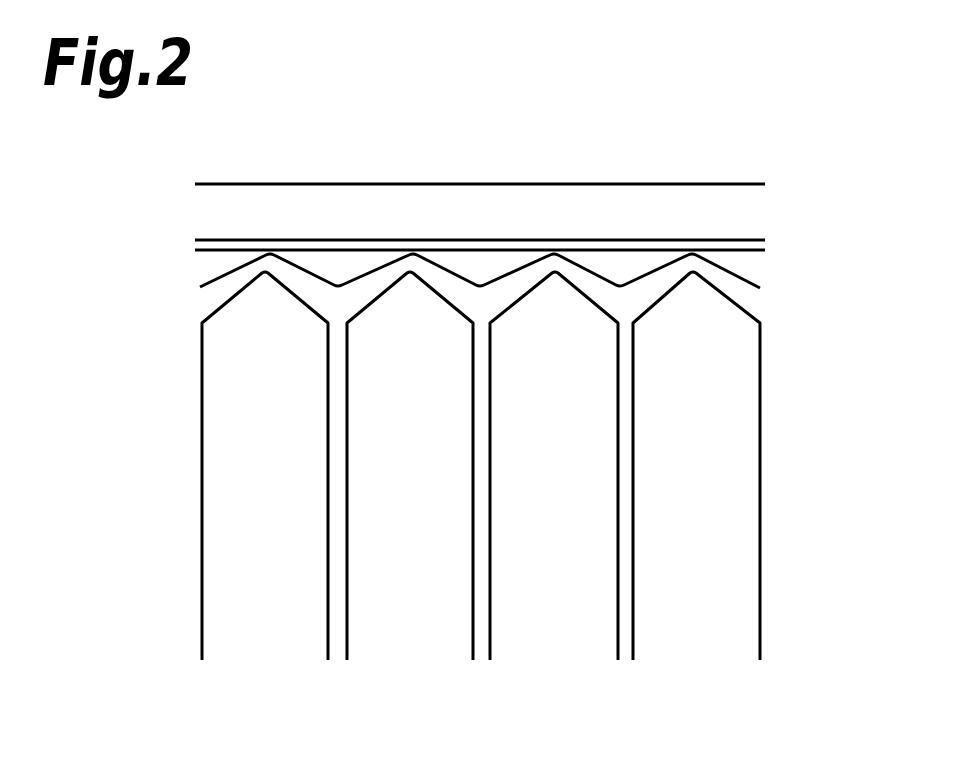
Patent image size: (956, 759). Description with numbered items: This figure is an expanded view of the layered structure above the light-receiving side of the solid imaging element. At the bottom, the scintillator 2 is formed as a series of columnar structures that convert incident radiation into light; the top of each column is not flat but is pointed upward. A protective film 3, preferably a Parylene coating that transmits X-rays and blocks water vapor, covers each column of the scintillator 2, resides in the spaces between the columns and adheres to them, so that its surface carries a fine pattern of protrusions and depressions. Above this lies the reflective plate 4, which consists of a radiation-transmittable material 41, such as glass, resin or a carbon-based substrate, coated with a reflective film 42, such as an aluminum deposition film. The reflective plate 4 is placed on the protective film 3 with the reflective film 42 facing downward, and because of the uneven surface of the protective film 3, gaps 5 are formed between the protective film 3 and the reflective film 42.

The scintillator 2 is at (750, 616).
The protective film 3 is at (748, 297).
The reflective plate 4 is at (565, 220).
The radiation-transmittable material 41 is at (755, 210).
The reflective film 42 is at (755, 245).
The gaps 5 is at (333, 265).